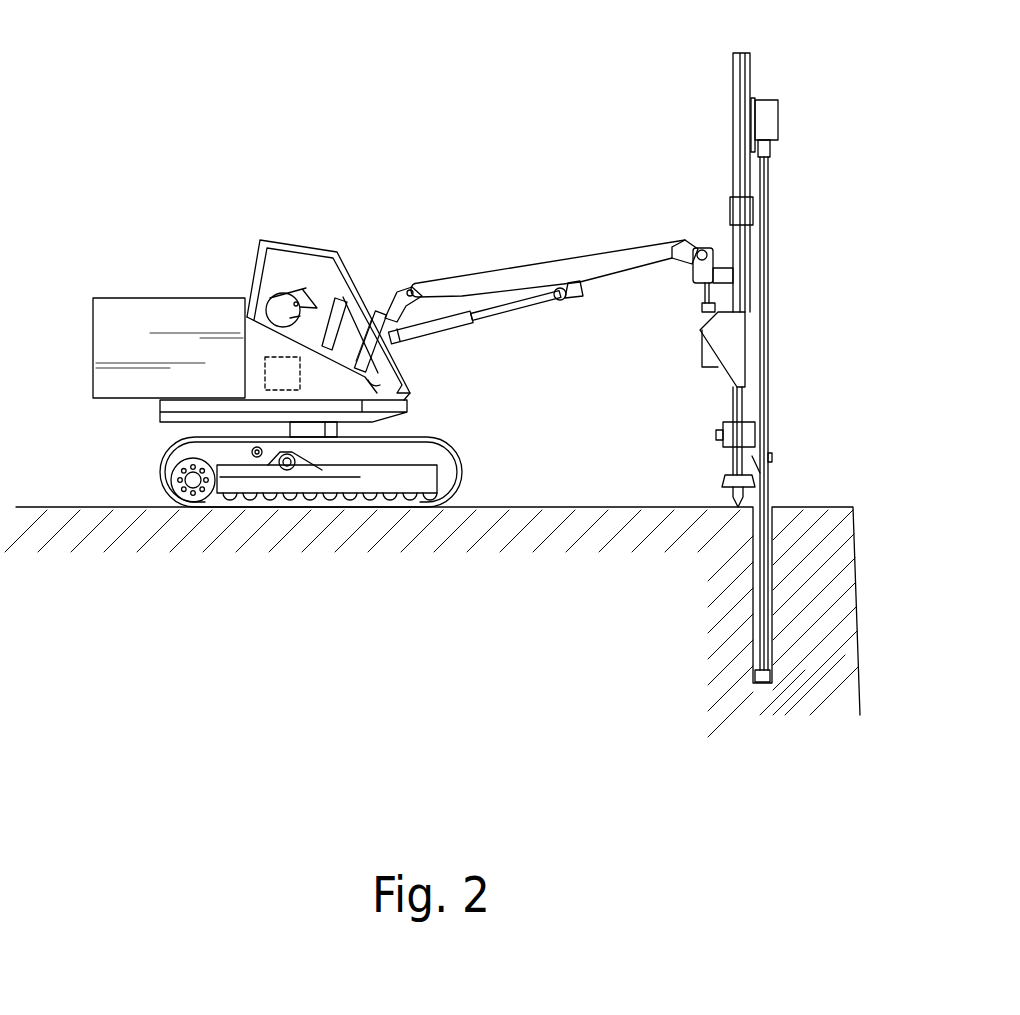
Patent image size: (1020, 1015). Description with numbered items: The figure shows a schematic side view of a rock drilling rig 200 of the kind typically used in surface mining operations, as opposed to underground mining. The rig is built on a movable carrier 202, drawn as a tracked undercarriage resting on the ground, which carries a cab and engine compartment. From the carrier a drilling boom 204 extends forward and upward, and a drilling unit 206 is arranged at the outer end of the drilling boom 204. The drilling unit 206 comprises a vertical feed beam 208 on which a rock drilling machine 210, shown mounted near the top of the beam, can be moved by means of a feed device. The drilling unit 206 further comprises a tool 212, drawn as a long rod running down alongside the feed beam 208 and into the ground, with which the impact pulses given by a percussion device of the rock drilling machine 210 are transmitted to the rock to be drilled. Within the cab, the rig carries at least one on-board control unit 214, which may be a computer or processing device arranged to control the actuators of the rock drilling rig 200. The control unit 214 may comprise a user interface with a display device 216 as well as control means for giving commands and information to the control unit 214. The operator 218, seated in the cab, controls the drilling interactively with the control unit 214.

The rock drilling rig 200 is at (479, 130).
The movable carrier 202 is at (298, 520).
The drilling boom 204 is at (585, 262).
The drilling unit 206 is at (850, 192).
The feed beam 208 is at (740, 128).
The rock drilling machine 210 is at (767, 110).
The tool 212 is at (769, 193).
The control unit 214 is at (275, 375).
The display device 216 is at (333, 297).
The operator 218 is at (272, 310).